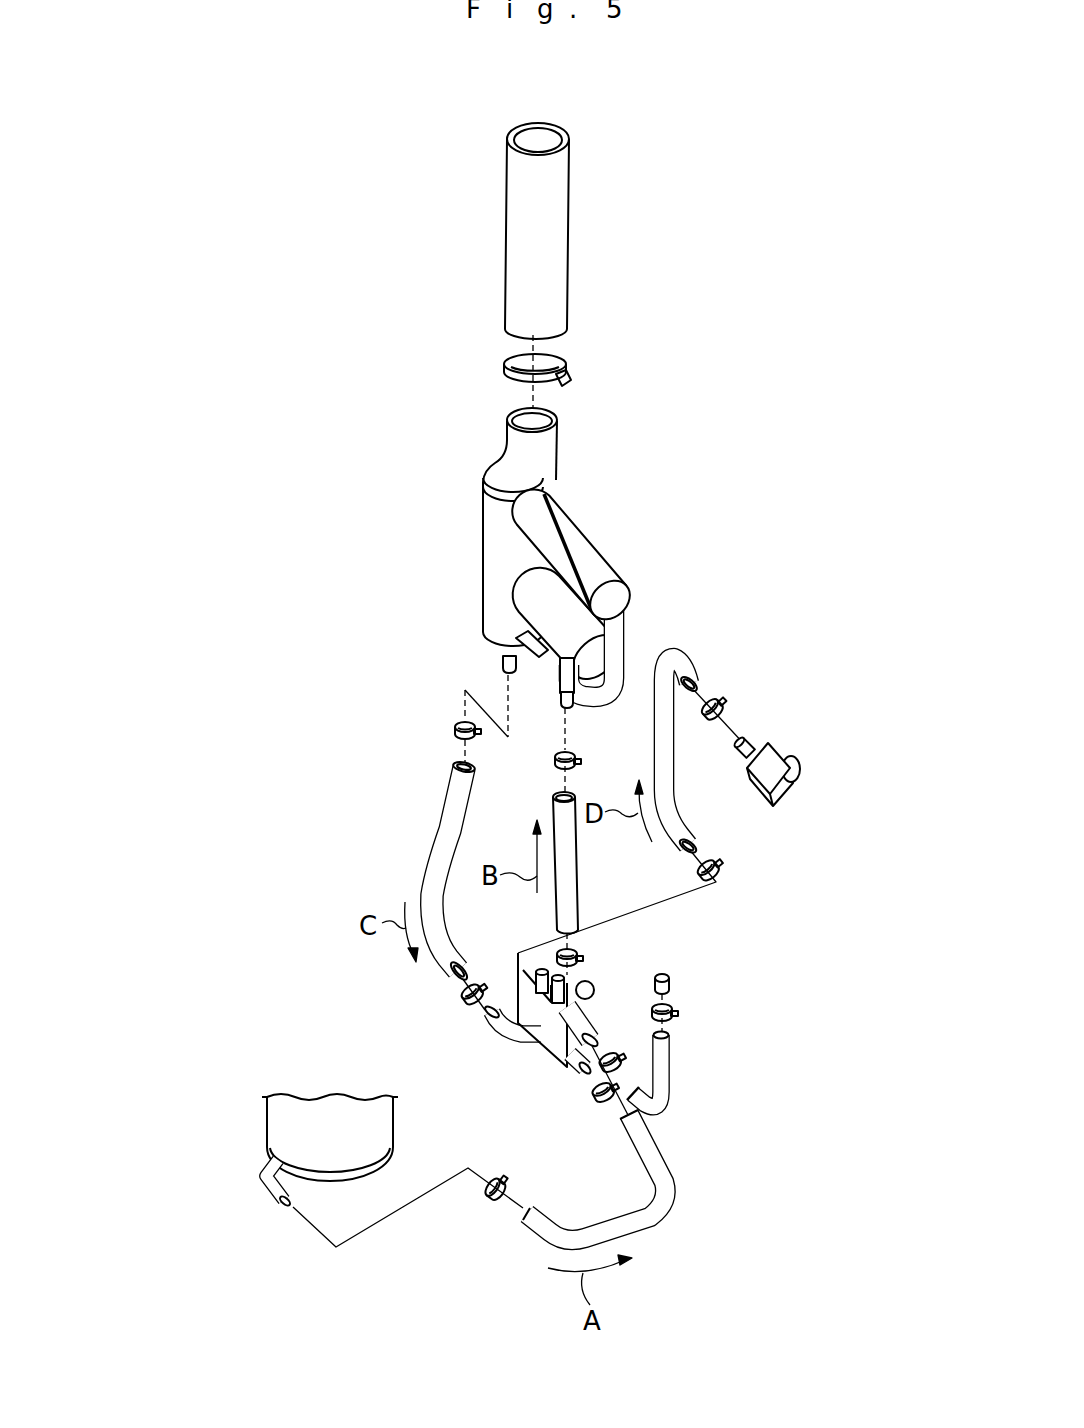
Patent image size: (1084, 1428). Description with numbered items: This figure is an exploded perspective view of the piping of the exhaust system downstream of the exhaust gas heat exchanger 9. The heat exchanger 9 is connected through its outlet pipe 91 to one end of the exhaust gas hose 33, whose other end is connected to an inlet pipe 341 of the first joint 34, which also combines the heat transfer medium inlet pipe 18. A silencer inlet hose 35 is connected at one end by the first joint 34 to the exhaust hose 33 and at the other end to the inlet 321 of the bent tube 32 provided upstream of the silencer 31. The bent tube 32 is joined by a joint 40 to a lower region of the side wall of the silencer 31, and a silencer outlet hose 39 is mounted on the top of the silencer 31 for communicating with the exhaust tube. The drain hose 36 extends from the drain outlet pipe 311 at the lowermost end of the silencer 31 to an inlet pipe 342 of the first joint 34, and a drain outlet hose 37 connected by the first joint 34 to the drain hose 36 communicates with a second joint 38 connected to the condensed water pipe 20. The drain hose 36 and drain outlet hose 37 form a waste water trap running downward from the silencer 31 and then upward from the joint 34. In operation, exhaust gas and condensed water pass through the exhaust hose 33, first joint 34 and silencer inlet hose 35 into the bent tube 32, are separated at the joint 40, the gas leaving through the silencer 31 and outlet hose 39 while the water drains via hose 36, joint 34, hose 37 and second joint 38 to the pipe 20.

The silencer outlet hose 39 is at (560, 233).
The silencer 31 is at (490, 536).
The bent tube 32 is at (633, 614).
The joint 40 is at (512, 636).
The drain outlet pipe 311 is at (500, 665).
The inlet 321 is at (573, 705).
The drain hose 36 is at (438, 848).
The silencer inlet hose 35 is at (577, 862).
The drain outlet hose 37 is at (665, 790).
The condensed water pipe 20 is at (786, 758).
The second joint 38 is at (790, 798).
The inlet pipe 342 is at (492, 1027).
The first joint 34 is at (556, 1047).
The heat transfer medium inlet pipe 18 is at (588, 968).
The inlet pipe 341 is at (576, 1068).
The exhaust gas hose 33 is at (673, 1187).
The exhaust gas heat exchanger 9 is at (267, 1122).
The outlet pipe 91 is at (272, 1200).